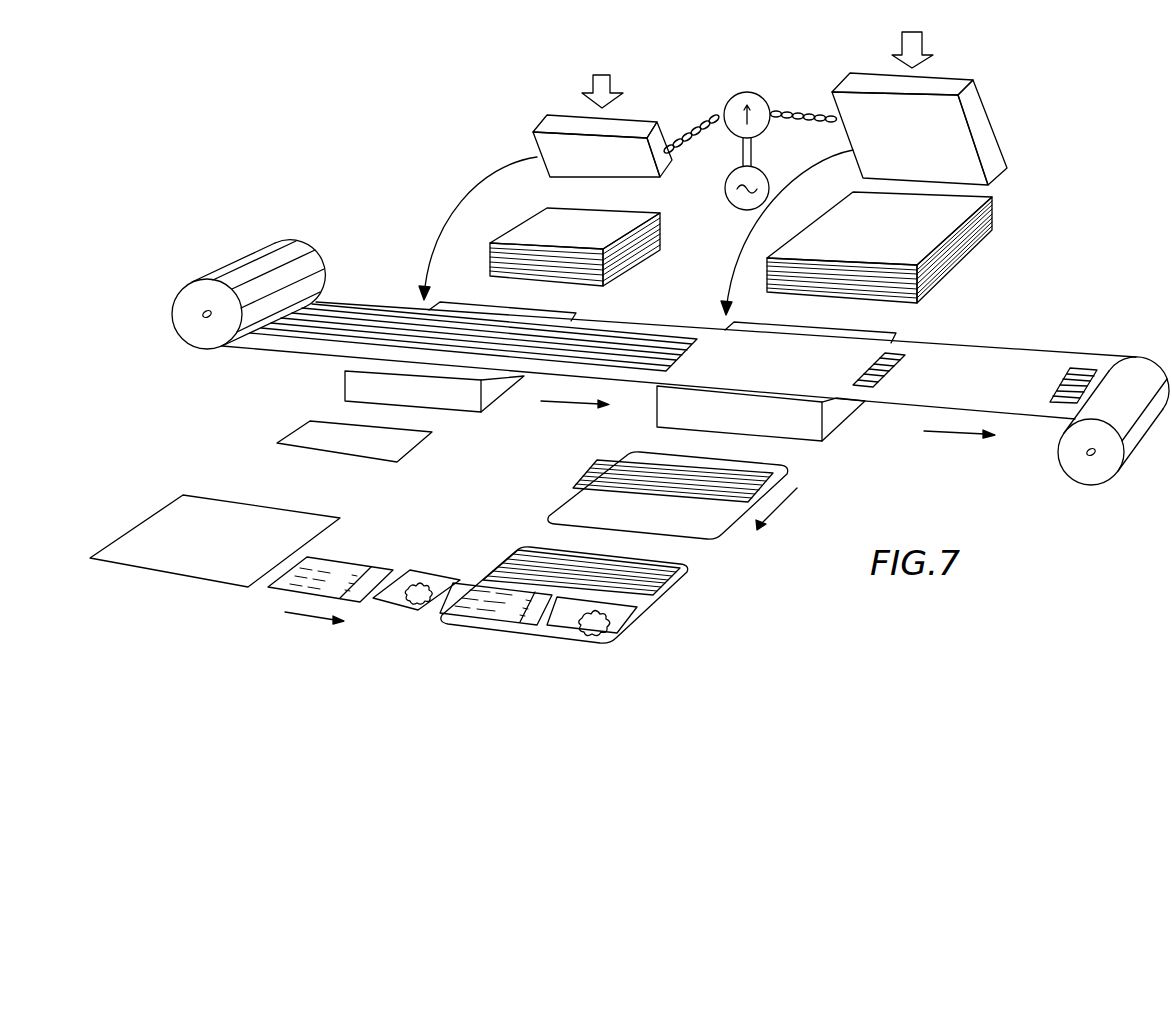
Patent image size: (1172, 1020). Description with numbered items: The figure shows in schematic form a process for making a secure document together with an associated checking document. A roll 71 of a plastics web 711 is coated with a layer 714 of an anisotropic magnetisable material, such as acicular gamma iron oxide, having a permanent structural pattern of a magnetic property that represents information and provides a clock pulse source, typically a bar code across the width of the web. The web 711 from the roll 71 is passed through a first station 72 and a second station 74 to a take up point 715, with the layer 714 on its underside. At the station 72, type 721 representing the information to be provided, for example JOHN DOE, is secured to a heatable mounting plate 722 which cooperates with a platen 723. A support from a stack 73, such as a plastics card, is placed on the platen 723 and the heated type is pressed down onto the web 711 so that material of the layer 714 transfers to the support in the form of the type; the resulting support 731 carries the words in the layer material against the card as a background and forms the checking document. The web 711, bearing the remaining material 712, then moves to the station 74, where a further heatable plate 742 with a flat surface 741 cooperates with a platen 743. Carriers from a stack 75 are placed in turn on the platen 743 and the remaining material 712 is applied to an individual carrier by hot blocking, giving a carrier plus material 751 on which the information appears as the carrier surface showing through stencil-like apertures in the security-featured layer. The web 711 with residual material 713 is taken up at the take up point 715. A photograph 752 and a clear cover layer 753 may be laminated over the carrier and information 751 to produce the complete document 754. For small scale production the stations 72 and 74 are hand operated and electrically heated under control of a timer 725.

The roll 71 is at (248, 259).
The plastics web 711 is at (360, 300).
The remaining material 712 is at (671, 343).
The residual material 713 is at (1068, 381).
The layer 714 is at (293, 325).
The take up point 715 is at (1087, 454).
The station 72 is at (512, 109).
The type 721 is at (556, 143).
The heatable mounting plate 722 is at (633, 125).
The platen 723 is at (463, 398).
The timer 725 is at (732, 137).
The stack 73 is at (527, 227).
The station 74 is at (1017, 86).
The flat surface 741 is at (963, 162).
The further heatable plate 742 is at (990, 143).
The platen 743 is at (838, 416).
The stack 75 is at (990, 220).
The support 731 is at (397, 463).
The carrier plus material 751 is at (723, 537).
The photograph 752 is at (425, 578).
The clear cover layer 753 is at (270, 522).
The complete document 754 is at (653, 606).